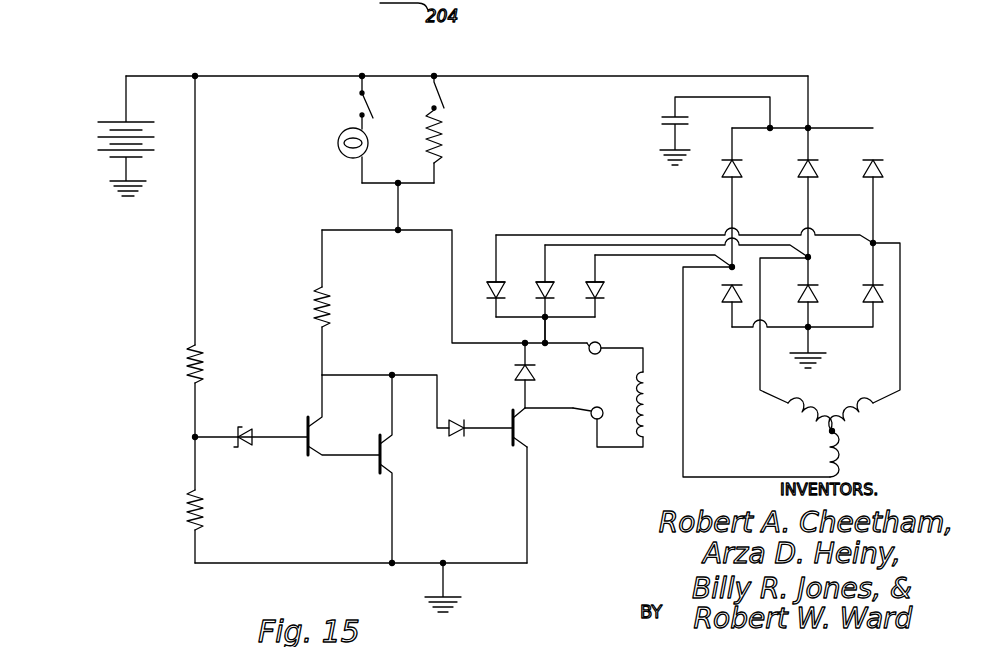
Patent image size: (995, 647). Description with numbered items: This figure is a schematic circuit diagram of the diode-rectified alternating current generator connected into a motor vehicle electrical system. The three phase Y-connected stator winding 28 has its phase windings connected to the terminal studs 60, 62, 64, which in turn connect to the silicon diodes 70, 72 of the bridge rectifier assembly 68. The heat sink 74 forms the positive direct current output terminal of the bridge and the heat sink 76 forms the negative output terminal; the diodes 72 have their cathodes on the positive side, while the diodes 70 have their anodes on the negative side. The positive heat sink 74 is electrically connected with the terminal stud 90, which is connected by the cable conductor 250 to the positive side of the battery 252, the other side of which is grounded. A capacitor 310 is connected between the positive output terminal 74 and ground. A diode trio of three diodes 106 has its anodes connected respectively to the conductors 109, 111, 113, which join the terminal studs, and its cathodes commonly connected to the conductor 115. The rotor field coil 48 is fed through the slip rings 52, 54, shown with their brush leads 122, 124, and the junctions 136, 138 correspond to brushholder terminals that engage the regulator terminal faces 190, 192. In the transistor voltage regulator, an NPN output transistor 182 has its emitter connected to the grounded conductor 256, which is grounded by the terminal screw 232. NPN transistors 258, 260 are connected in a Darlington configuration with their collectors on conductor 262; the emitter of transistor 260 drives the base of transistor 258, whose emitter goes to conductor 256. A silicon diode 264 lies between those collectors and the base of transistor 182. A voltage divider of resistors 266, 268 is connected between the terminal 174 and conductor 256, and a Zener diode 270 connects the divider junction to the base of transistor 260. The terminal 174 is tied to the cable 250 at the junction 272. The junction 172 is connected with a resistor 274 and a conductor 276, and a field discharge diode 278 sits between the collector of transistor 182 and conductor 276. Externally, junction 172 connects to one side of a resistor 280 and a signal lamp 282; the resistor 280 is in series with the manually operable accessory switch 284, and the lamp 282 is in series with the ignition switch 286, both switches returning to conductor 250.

The three phase Y-connected stator winding 28 is at (842, 433).
The field coil 48 is at (650, 430).
The slip ring 52 is at (601, 352).
The slip ring 54 is at (600, 420).
The terminal stud 60 is at (875, 242).
The terminal stud 62 is at (812, 258).
The terminal stud 64 is at (728, 270).
The bridge rectifier assembly 68 is at (730, 196).
The silicon diodes 70 is at (728, 300).
The silicon diodes 72 is at (742, 172).
The heat sink 74 is at (838, 128).
The heat sink 76 is at (802, 335).
The terminal stud 90 is at (810, 126).
The diodes 106 is at (500, 280).
The conductor 109 is at (596, 234).
The conductor 111 is at (658, 244).
The conductor 113 is at (628, 256).
The conductor 115 is at (542, 328).
The relay coil lead 122 is at (596, 341).
The relay coil lead 124 is at (598, 408).
The junction 136 is at (548, 346).
The junction 138 is at (565, 412).
The junction 172 is at (400, 229).
The terminal 174 is at (196, 292).
The NPN output transistor 182 is at (527, 430).
The terminal face 190 is at (548, 344).
The terminal face 192 is at (538, 408).
The terminal screw 232 is at (446, 566).
The cable conductor 250 is at (632, 76).
The battery 252 is at (118, 120).
The conductor 256 is at (276, 562).
The NPN transistor 258 is at (386, 455).
The NPN transistor 260 is at (312, 434).
The conductor 262 is at (348, 375).
The silicon diode 264 is at (460, 420).
The resistor 266 is at (203, 356).
The resistor 268 is at (203, 506).
The Zener diode 270 is at (250, 430).
The junction 272 is at (196, 77).
The resistor 274 is at (331, 295).
The conductor 276 is at (450, 292).
The field discharge diode 278 is at (518, 370).
The resistor 280 is at (444, 141).
The signal lamp 282 is at (339, 138).
The manually operable switch 284 is at (441, 101).
The manually operable switch 286 is at (360, 106).
The capacitor 310 is at (668, 112).